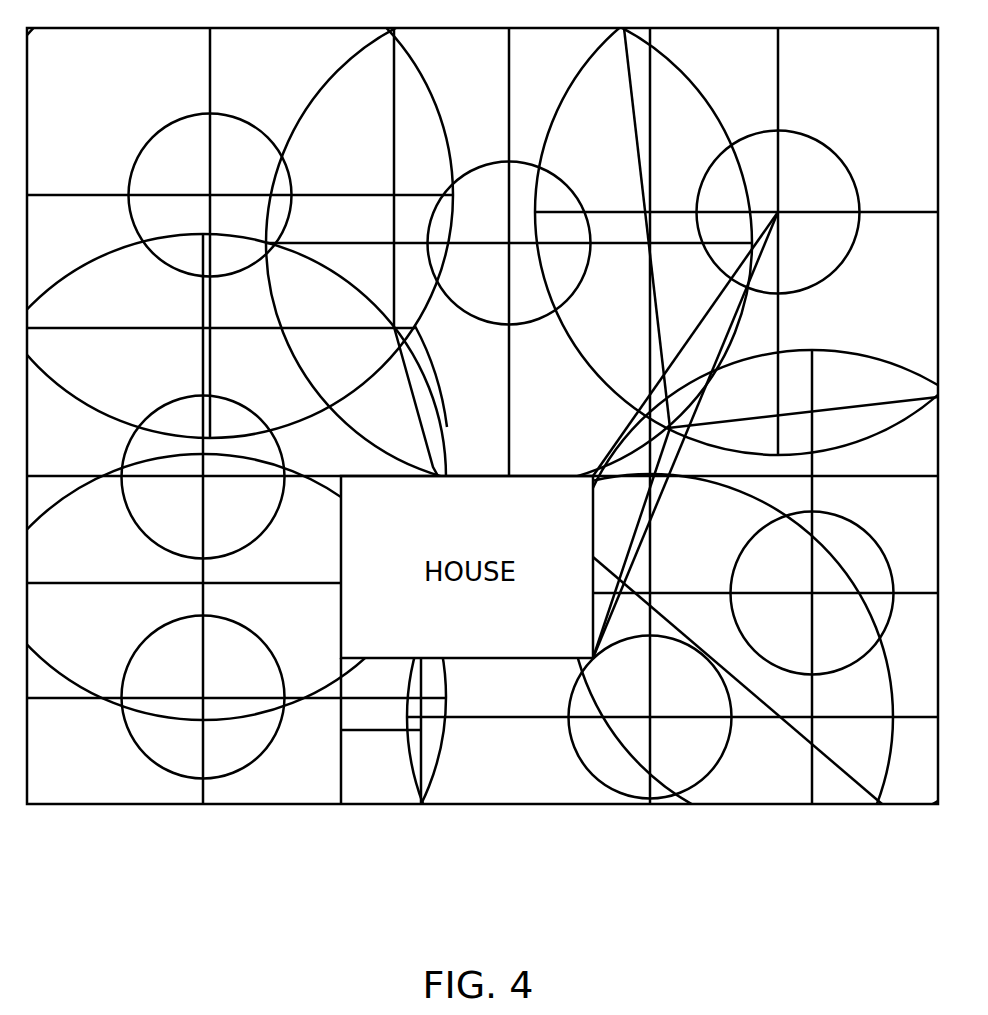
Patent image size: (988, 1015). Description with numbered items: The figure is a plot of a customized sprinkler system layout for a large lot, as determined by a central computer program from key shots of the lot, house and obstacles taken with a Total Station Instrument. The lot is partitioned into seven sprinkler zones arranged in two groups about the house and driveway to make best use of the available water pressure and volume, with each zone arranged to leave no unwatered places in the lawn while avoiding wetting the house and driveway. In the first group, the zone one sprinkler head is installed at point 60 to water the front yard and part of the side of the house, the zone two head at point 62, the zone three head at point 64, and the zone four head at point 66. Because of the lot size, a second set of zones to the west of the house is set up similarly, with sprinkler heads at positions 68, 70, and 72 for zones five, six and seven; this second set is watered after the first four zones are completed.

The Zone 1 sprinkler head installation point 60 is at (650, 717).
The Zone 2 sprinkler head installation point 62 is at (812, 594).
The Zone 3 sprinkler head installation point 64 is at (778, 212).
The Zone 4 sprinkler head installation point 66 is at (509, 244).
The Zone 5 sprinkler head position 68 is at (210, 193).
The Zone 6 sprinkler head position 70 is at (203, 478).
The Zone 7 sprinkler head position 72 is at (203, 698).